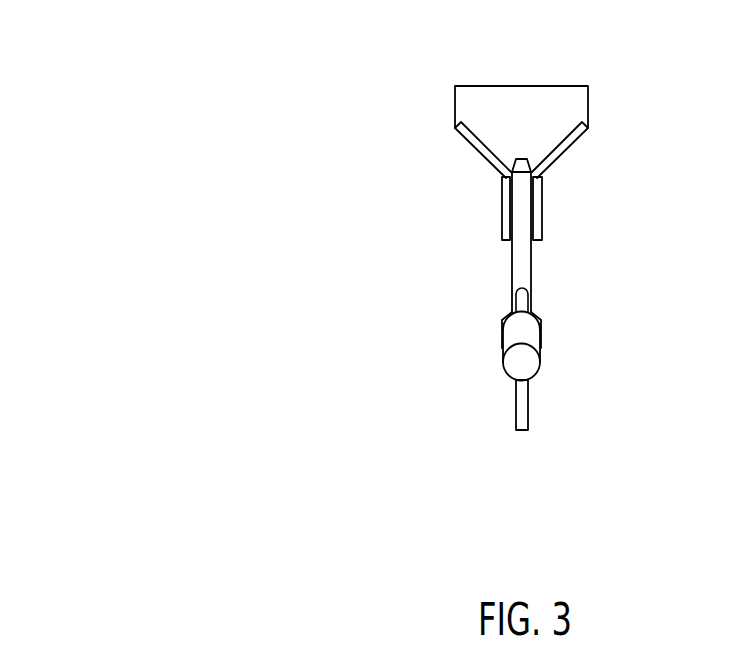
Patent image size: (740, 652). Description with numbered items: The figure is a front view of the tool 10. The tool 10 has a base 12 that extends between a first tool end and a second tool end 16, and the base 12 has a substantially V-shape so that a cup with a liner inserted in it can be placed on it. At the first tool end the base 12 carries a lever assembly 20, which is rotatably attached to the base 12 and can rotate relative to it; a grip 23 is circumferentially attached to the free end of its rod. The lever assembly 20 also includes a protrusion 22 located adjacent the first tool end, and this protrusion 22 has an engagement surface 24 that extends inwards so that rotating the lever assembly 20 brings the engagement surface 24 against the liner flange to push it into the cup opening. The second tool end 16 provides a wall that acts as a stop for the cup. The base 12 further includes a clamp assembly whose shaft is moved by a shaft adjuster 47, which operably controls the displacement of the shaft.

The tool 10 is at (125, 198).
The base 12 is at (560, 152).
The second tool end 16 is at (540, 103).
The lever assembly 20 is at (485, 367).
The protrusion 22 is at (520, 240).
The grip 23 is at (537, 343).
The engagement surface 24 is at (520, 171).
The shaft adjuster 47 is at (528, 428).